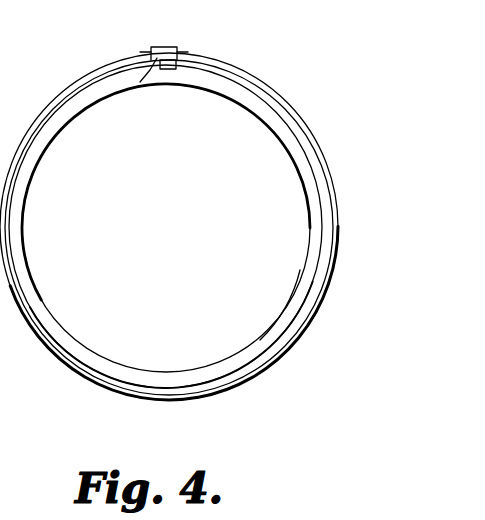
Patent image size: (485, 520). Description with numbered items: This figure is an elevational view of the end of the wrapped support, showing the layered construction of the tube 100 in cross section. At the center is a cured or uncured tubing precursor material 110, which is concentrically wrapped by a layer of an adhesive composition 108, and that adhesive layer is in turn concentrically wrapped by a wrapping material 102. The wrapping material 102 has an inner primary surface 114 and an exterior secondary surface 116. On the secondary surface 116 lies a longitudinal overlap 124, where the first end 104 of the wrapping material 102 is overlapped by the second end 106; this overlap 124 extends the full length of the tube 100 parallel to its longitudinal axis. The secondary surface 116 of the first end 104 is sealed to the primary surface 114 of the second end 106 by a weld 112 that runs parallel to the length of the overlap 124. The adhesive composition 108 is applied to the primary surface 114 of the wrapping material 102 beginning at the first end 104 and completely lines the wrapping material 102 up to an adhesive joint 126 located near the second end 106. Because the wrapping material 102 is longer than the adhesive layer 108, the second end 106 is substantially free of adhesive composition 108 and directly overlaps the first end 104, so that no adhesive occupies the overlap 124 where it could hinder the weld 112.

The tube 100 is at (312, 75).
The wrapping material 102 is at (336, 223).
The first end 104 is at (158, 57).
The second end 106 is at (153, 54).
The adhesive composition 108 is at (287, 342).
The tubing precursor material 110 is at (297, 298).
The weld 112 is at (177, 53).
The primary surface 114 is at (331, 267).
The secondary surface 116 is at (320, 148).
The longitudinal overlap 124 is at (146, 40).
The adhesive joint 126 is at (172, 64).